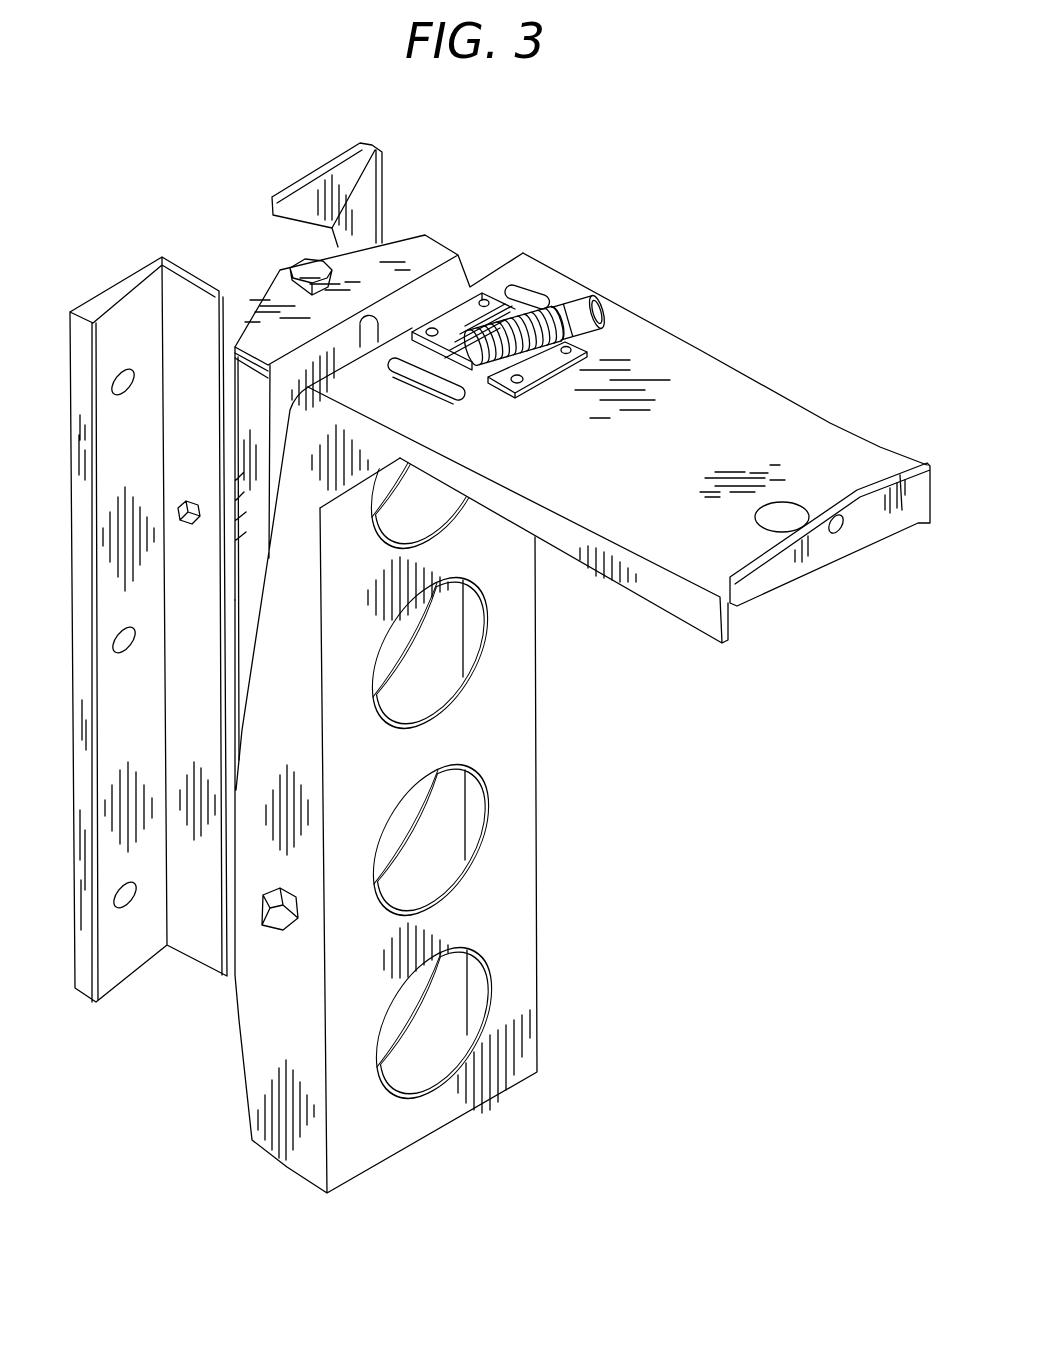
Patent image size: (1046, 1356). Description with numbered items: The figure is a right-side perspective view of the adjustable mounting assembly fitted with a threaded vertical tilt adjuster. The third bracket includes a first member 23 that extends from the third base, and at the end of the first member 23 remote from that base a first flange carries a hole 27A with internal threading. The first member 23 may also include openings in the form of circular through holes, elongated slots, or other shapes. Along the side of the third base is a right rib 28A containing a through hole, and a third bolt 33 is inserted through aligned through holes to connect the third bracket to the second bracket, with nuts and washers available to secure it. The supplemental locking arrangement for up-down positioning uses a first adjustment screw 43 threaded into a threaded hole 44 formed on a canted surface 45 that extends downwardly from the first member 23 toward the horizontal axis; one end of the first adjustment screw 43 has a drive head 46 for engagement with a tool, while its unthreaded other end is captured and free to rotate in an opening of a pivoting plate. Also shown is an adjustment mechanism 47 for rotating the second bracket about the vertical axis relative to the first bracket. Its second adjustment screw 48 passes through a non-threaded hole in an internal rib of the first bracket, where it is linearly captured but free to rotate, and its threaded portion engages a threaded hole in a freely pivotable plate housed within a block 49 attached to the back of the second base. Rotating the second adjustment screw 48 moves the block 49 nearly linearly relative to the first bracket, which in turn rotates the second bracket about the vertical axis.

The first member 23 is at (677, 460).
The hole 27A is at (841, 532).
The right rib 28A is at (290, 1182).
The third bolt 33 is at (270, 918).
The first adjustment screw 43 is at (540, 312).
The threaded hole 44 is at (472, 345).
The canted surface 45 is at (468, 330).
The drive head 46 is at (600, 300).
The adjustment mechanism 47 is at (200, 478).
The second adjustment screw 48 is at (178, 524).
The block 49 is at (232, 507).